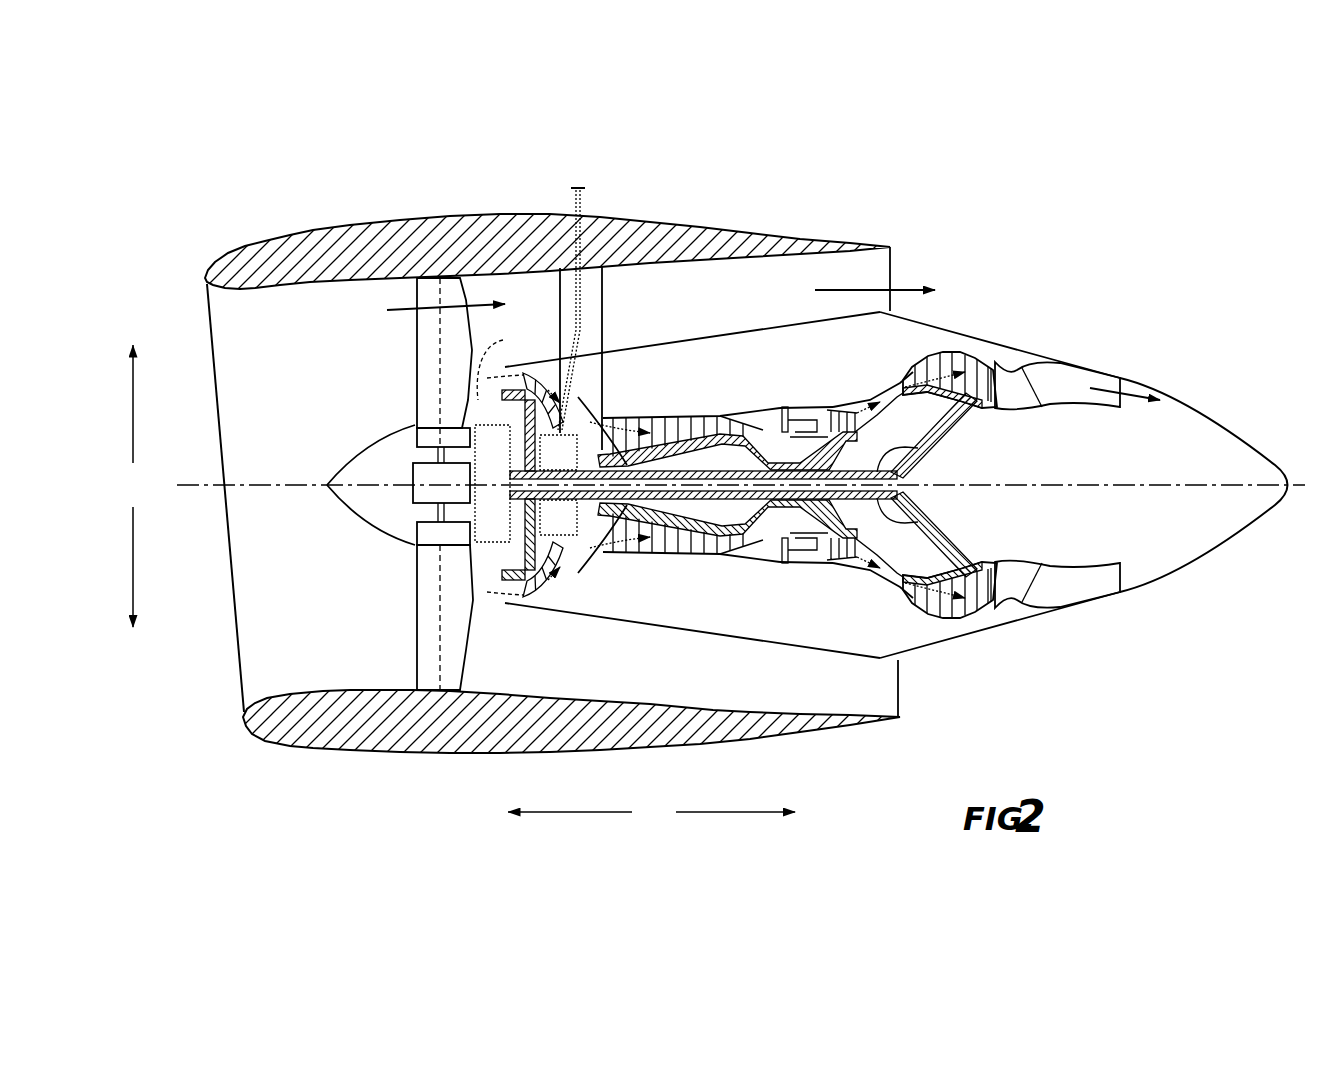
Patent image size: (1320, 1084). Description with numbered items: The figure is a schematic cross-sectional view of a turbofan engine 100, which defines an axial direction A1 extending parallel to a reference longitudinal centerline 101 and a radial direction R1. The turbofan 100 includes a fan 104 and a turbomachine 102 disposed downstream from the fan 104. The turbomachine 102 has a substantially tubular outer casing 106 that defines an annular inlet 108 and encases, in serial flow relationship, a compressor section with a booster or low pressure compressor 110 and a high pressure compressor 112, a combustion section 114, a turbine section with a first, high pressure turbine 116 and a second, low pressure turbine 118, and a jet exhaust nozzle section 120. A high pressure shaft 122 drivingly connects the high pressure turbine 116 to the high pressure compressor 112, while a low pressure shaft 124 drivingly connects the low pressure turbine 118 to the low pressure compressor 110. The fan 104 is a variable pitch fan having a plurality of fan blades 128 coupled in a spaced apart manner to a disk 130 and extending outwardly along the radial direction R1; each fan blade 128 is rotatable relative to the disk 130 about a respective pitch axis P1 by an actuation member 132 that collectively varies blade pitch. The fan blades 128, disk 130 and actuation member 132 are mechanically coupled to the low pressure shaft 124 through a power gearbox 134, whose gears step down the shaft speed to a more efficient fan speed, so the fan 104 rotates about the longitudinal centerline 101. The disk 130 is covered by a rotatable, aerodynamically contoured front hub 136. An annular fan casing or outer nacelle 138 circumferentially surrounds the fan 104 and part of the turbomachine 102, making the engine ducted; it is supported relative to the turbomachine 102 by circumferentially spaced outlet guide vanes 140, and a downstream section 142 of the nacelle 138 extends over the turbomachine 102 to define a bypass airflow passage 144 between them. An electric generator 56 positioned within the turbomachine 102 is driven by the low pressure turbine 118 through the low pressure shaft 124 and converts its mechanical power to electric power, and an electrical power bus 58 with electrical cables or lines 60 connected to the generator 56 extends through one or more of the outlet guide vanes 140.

The electric generator 56 is at (570, 527).
The electrical power bus 58 is at (565, 195).
The electrical cables or lines 60 is at (588, 194).
The turbofan engine 100 is at (997, 243).
The longitudinal centerline 101 is at (1062, 484).
The turbomachine 102 is at (721, 300).
The fan 104 is at (325, 310).
The outer casing 106 is at (762, 645).
The annular inlet 108 is at (520, 585).
The low pressure compressor 110 is at (565, 600).
The high pressure compressor 112 is at (633, 540).
The combustion section 114 is at (798, 550).
The high pressure turbine 116 is at (880, 553).
The low pressure turbine 118 is at (985, 615).
The jet exhaust nozzle section 120 is at (1040, 600).
The high pressure shaft 122 is at (800, 440).
The low pressure shaft 124 is at (932, 447).
The fan blades 128 is at (417, 615).
The disk 130 is at (425, 438).
The actuation member 132 is at (410, 467).
The power gearbox 134 is at (551, 430).
The front hub 136 is at (330, 497).
The outer nacelle 138 is at (460, 752).
The outlet guide vanes 140 is at (604, 302).
The downstream section 142 is at (831, 235).
The bypass airflow passage 144 is at (789, 306).
The pitch axis P1 is at (426, 295).
The radial direction R1 is at (134, 486).
The axial direction A1 is at (651, 815).